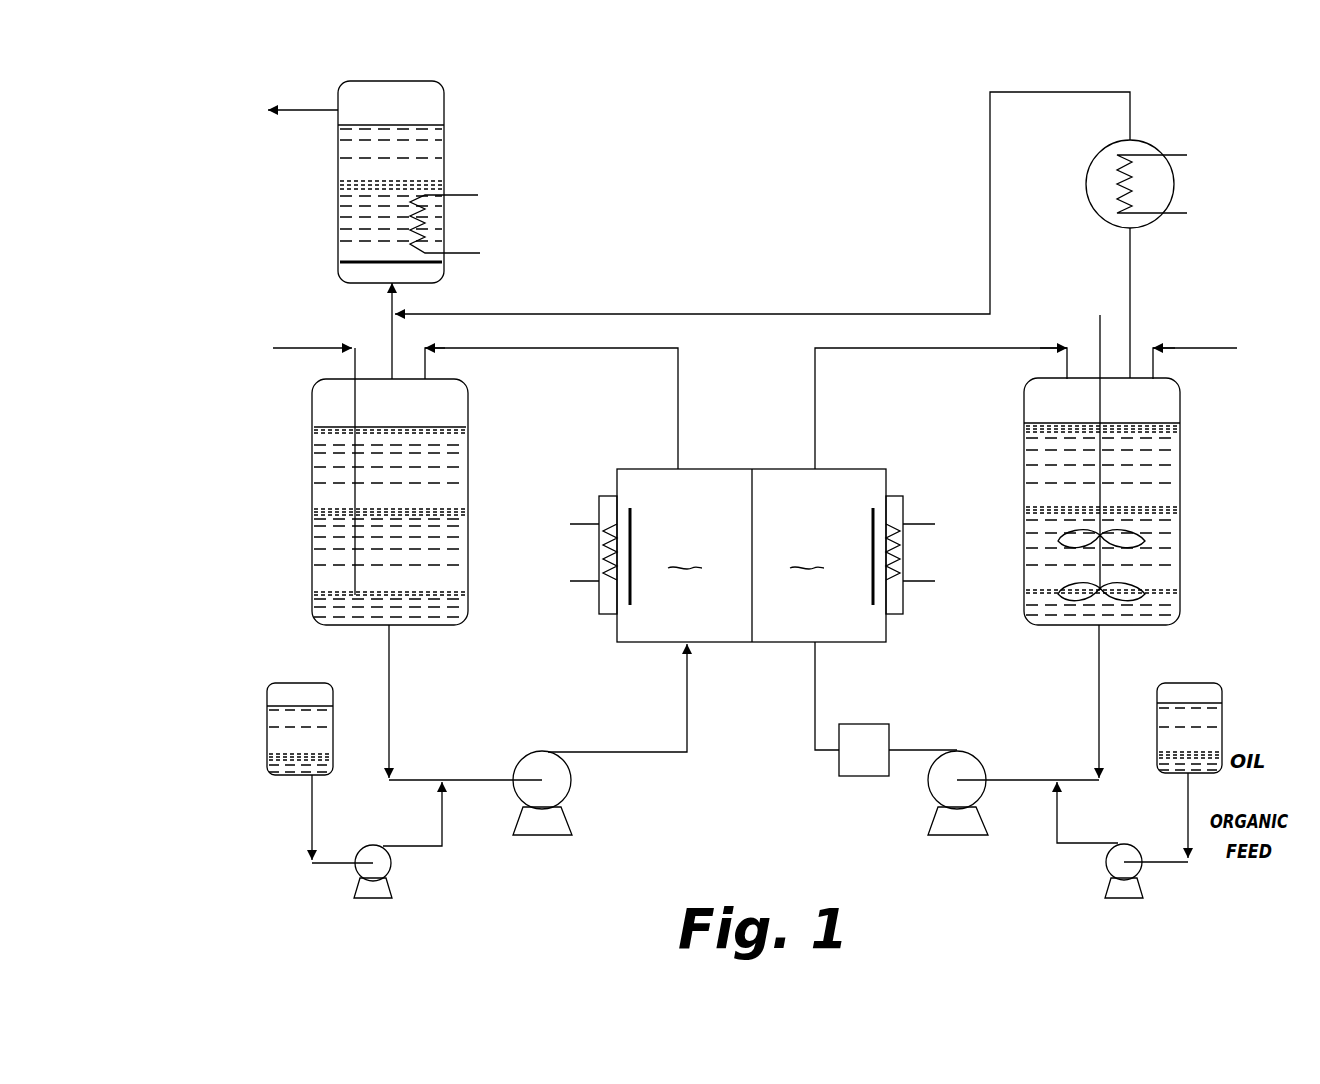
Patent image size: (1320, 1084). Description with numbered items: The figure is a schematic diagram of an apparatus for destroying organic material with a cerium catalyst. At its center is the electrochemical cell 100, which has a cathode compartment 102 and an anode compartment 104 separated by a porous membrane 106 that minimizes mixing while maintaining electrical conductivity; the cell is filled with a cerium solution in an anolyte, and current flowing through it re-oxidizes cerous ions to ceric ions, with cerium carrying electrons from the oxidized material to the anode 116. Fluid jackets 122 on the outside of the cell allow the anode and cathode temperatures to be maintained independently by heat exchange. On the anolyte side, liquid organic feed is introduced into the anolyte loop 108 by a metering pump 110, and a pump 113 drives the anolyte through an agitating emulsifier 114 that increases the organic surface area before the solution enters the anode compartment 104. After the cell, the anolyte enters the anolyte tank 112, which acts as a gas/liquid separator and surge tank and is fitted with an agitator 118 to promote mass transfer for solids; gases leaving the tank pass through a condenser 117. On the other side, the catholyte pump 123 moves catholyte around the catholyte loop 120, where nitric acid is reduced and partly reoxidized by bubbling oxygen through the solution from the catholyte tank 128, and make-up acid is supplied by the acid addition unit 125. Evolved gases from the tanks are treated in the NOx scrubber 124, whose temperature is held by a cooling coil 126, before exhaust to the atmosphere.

The electrochemical cell 100 is at (752, 599).
The cathode compartment 102 is at (674, 543).
The anode compartment 104 is at (827, 525).
The porous membrane 106 is at (752, 492).
The anolyte loop 108 is at (1171, 546).
The metering pump 110 is at (1108, 872).
The anolyte tank 112 is at (1180, 477).
The pump 113 is at (933, 795).
The agitating emulsifier 114 is at (862, 776).
The anode 116 is at (870, 510).
The condenser 117 is at (1174, 190).
The agitator 118 is at (1145, 541).
The catholyte loop 120 is at (288, 625).
The fluid jackets 122 is at (599, 601).
The catholyte pump 123 is at (570, 796).
The NOx scrubber 124 is at (446, 160).
The acid addition unit 125 is at (253, 796).
The cooling coil 126 is at (422, 223).
The catholyte tank 128 is at (312, 518).